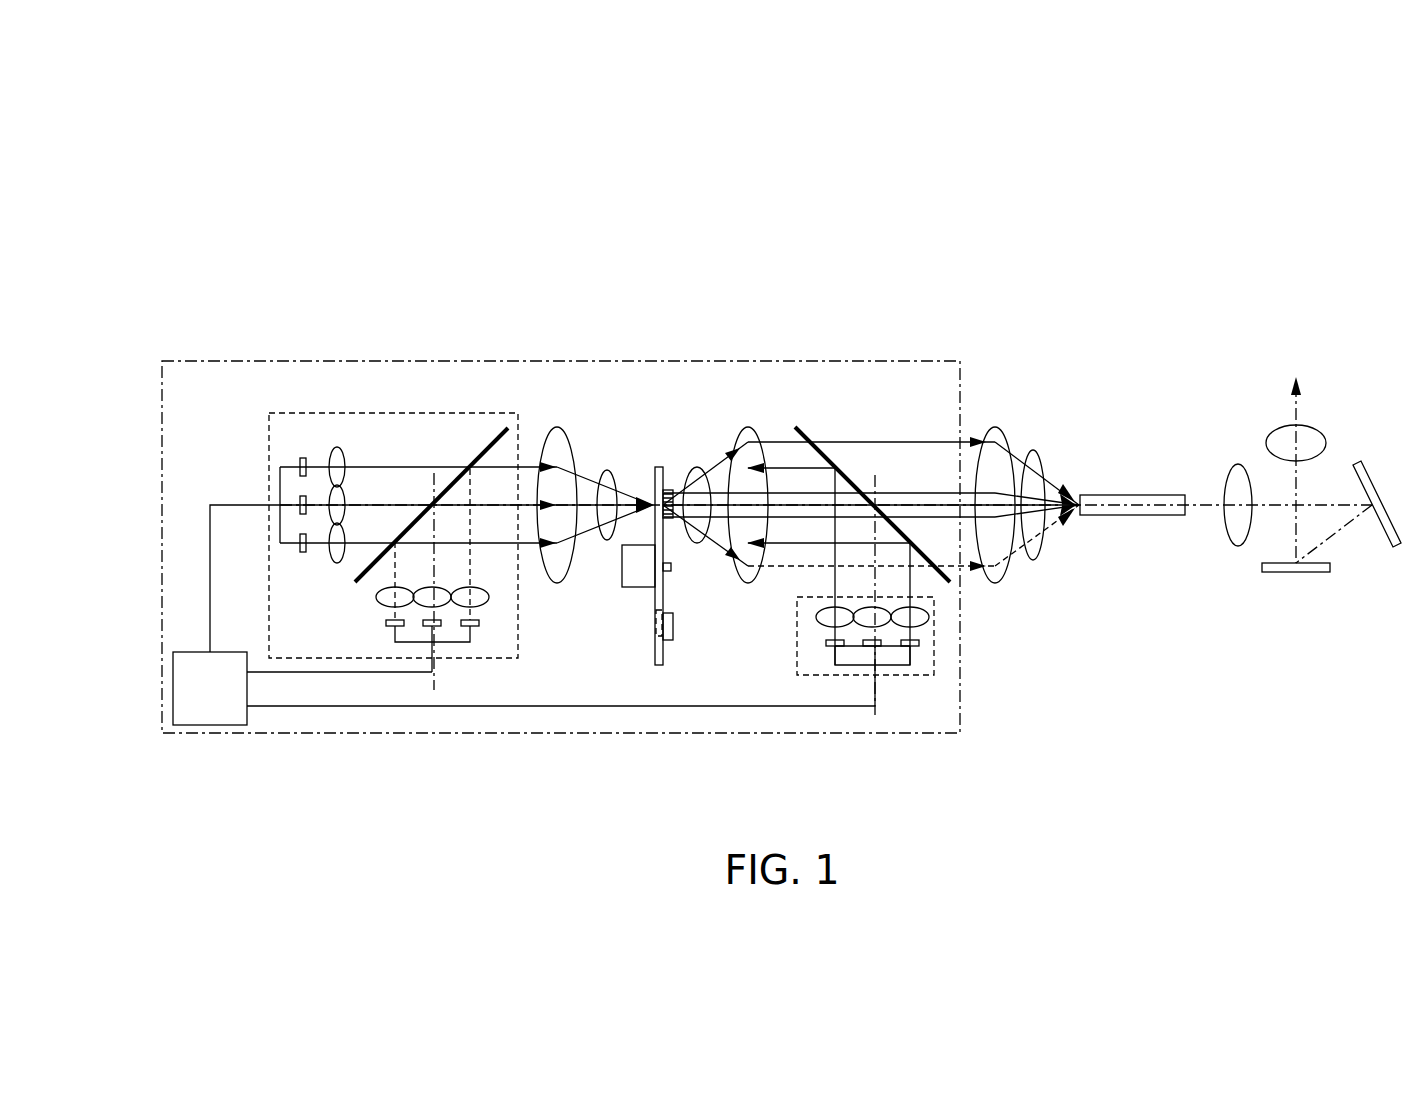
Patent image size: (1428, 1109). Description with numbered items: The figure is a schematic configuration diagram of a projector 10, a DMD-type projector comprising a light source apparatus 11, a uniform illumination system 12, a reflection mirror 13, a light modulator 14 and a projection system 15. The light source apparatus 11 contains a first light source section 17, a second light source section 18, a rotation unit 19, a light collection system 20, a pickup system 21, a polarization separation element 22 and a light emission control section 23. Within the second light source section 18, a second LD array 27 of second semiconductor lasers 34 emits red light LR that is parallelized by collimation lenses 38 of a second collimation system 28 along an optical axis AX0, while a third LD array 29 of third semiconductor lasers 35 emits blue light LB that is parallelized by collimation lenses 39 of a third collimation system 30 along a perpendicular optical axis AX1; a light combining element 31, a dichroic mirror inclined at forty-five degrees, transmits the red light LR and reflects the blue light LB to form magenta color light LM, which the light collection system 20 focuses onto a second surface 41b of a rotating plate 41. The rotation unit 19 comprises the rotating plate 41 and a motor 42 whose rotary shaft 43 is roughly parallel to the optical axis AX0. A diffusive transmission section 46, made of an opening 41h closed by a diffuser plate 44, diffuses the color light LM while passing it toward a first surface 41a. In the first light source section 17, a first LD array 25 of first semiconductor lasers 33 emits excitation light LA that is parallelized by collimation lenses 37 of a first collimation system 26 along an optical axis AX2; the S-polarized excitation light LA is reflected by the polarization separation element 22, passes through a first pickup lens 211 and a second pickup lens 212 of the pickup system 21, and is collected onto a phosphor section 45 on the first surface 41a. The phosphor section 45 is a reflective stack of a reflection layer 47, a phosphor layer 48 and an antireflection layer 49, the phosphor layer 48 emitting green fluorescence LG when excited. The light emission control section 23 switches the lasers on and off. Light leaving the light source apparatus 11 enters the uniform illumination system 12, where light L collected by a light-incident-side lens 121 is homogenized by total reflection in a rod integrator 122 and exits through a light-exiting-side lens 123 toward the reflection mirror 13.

The projector 10 is at (894, 262).
The light source apparatus 11 is at (508, 360).
The uniform illumination system 12 is at (1117, 433).
The reflection mirror 13 is at (1372, 478).
The light modulator 14 is at (1296, 573).
The projection system 15 is at (1310, 438).
The first light source section 17 is at (833, 676).
The second light source section 18 is at (268, 455).
The rotation unit 19 is at (640, 644).
The light collection system 20 is at (556, 428).
The pickup system 21 is at (793, 423).
The first pickup lens 211 is at (746, 430).
The second pickup lens 212 is at (753, 432).
The polarization separation element 22 is at (806, 428).
The light emission control section 23 is at (209, 727).
The first LD array 25 is at (880, 658).
The first collimation system 26 is at (876, 623).
The second LD array 27 is at (264, 427).
The second collimation system 28 is at (287, 446).
The third LD array 29 is at (415, 658).
The third collimation system 30 is at (427, 621).
The light combining element 31 is at (481, 455).
The first semiconductor laser 33 is at (920, 643).
The second semiconductor laser 34 is at (299, 543).
The third semiconductor laser 35 is at (480, 623).
The collimation lens 37 is at (920, 617).
The collimation lens 38 is at (330, 553).
The collimation lens 39 is at (489, 597).
The rotating plate 41 is at (653, 633).
The first surface 41a is at (664, 650).
The second surface 41b is at (655, 650).
The opening 41h is at (664, 609).
The motor 42 is at (637, 577).
The rotary shaft 43 is at (672, 567).
The diffuser plate 44 is at (673, 627).
The phosphor section 45 is at (654, 524).
The diffusive transmission section 46 is at (690, 653).
The reflection layer 47 is at (653, 546).
The phosphor layer 48 is at (671, 485).
The antireflection layer 49 is at (694, 468).
The light-incident-side lens 121 is at (994, 428).
The rod integrator 122 is at (1128, 494).
The light-exiting-side lens 123 is at (1232, 436).
The light L is at (1034, 452).
The red light LR is at (371, 465).
The blue light LB is at (472, 563).
The green fluorescence LG is at (895, 490).
The excitation light LA is at (912, 585).
The color light LM is at (599, 472).
The optical axis AX0 is at (408, 500).
The optical axis AX1 is at (434, 692).
The optical axis AX2 is at (877, 717).